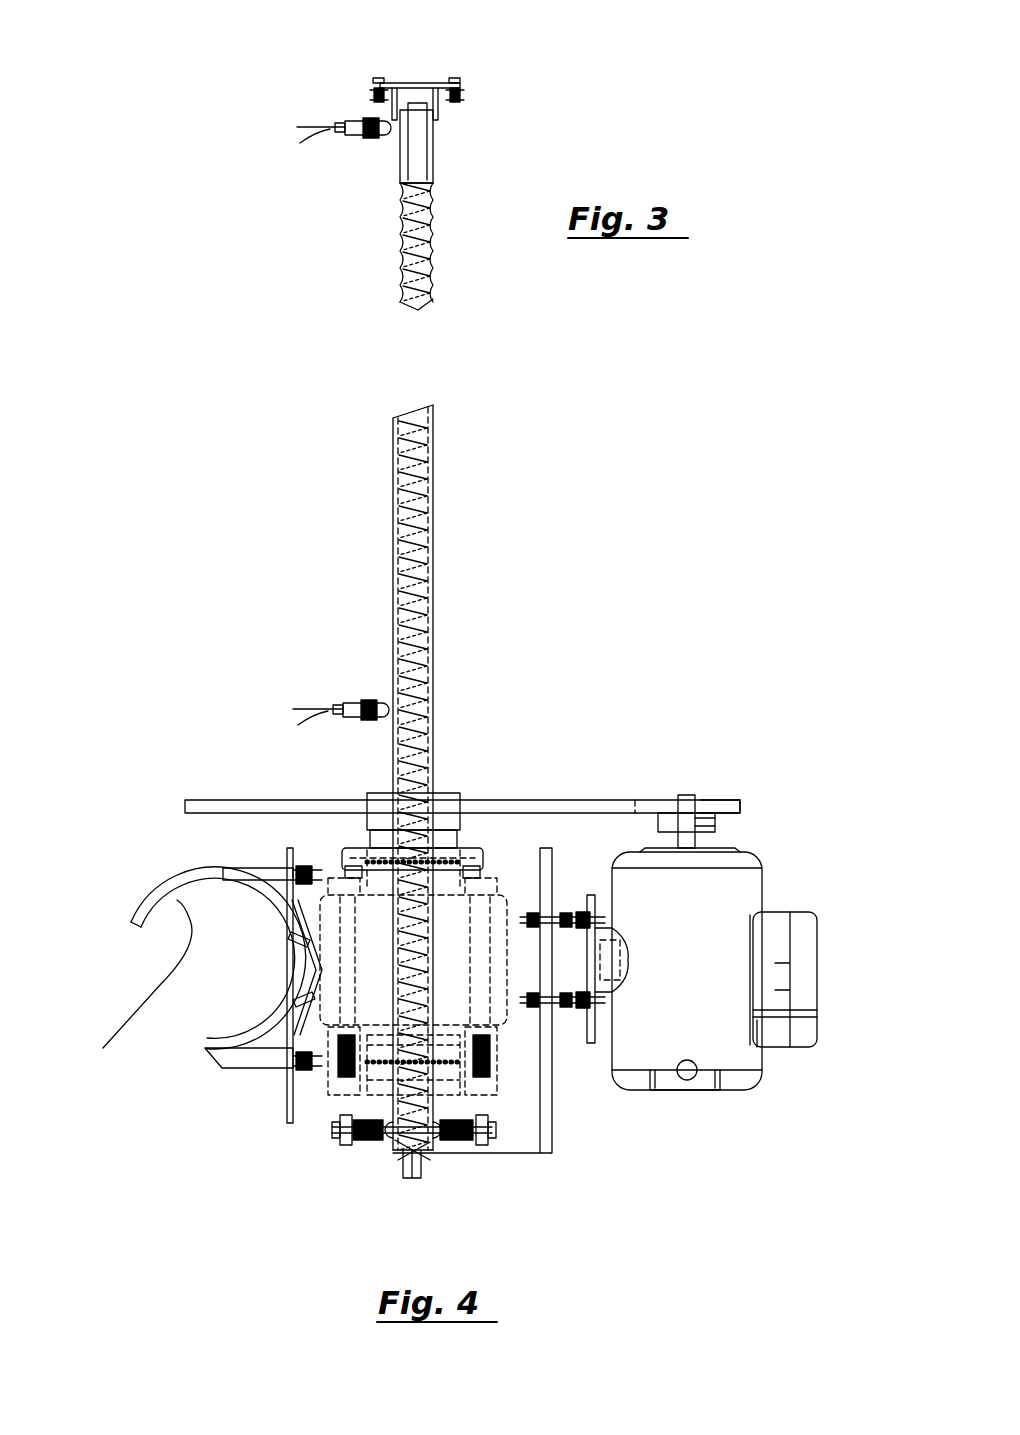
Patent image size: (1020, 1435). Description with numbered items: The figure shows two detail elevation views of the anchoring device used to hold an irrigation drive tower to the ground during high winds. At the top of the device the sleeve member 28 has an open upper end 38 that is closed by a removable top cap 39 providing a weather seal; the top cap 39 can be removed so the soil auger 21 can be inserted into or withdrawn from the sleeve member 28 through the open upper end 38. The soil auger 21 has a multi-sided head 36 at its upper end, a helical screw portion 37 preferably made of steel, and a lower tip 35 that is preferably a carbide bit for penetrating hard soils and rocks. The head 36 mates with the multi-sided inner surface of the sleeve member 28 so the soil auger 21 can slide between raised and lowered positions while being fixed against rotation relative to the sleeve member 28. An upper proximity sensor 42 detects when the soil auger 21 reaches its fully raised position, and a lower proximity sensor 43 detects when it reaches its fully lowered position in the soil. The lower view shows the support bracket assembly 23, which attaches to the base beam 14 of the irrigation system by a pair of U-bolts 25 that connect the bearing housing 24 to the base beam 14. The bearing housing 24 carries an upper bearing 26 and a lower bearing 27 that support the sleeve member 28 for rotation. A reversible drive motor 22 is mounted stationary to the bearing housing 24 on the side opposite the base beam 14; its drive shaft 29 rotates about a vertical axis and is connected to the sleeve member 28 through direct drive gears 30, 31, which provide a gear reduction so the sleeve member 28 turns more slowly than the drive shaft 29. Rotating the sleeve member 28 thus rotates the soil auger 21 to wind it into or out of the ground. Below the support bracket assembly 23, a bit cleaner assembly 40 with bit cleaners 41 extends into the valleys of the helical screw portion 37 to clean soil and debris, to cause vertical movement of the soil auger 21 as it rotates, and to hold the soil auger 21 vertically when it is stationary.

In FIG. 4, the base beam 14 is at (189, 967).
In FIG. 3, the soil auger 21 is at (402, 290).
In FIG. 4, the soil auger 21 is at (393, 483).
In FIG. 4, the drive motor 22 is at (745, 895).
In FIG. 4, the support bracket assembly 23 is at (550, 1100).
In FIG. 4, the bearing housing 24 is at (290, 1098).
In FIG. 4, the U-bolts 25 is at (245, 1068).
In FIG. 4, the upper bearing 26 is at (355, 850).
In FIG. 4, the lower bearing 27 is at (480, 1075).
In FIG. 4, the sleeve member 28 is at (395, 612).
In FIG. 4, the drive shaft 29 is at (688, 796).
In FIG. 4, the direct drive gear 30 is at (730, 806).
In FIG. 4, the direct drive gear 31 is at (582, 800).
In FIG. 4, the lower tip 35 is at (420, 1160).
In FIG. 3, the multi-sided head 36 is at (422, 145).
In FIG. 3, the helical screw portion 37 is at (430, 265).
In FIG. 3, the open upper end 38 is at (428, 100).
In FIG. 3, the top cap 39 is at (400, 82).
In FIG. 4, the bit cleaner assembly 40 is at (383, 1135).
In FIG. 4, the bit cleaners 41 is at (362, 1138).
In FIG. 3, the upper proximity sensor 42 is at (360, 137).
In FIG. 4, the lower proximity sensor 43 is at (370, 705).